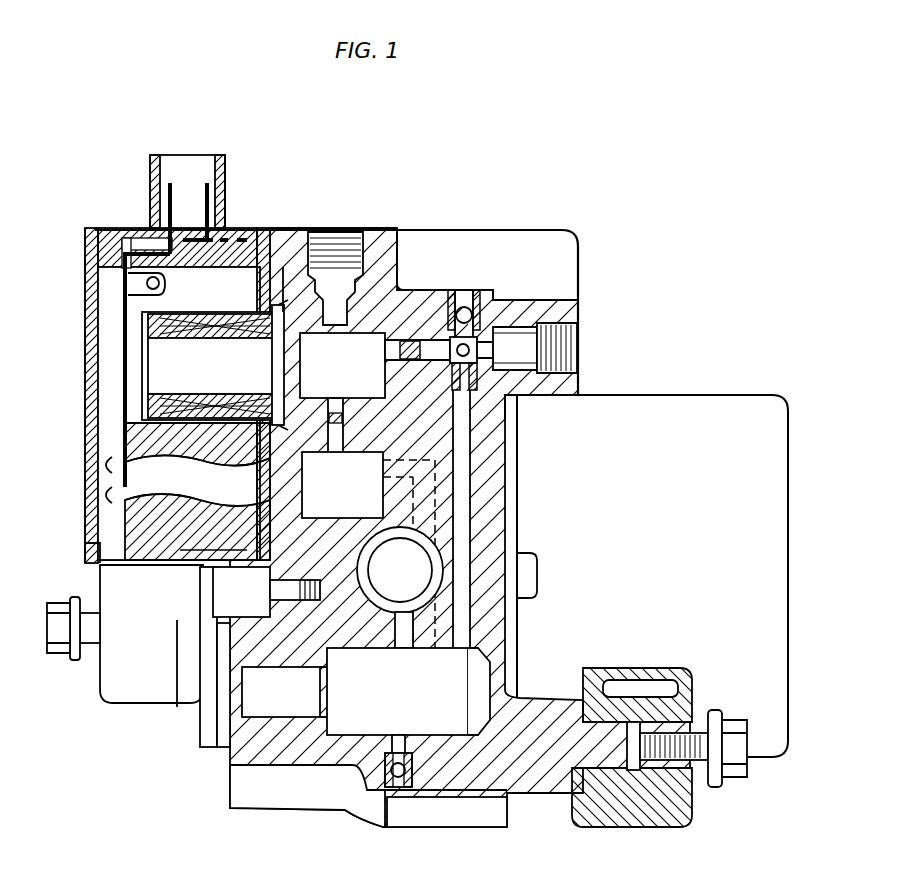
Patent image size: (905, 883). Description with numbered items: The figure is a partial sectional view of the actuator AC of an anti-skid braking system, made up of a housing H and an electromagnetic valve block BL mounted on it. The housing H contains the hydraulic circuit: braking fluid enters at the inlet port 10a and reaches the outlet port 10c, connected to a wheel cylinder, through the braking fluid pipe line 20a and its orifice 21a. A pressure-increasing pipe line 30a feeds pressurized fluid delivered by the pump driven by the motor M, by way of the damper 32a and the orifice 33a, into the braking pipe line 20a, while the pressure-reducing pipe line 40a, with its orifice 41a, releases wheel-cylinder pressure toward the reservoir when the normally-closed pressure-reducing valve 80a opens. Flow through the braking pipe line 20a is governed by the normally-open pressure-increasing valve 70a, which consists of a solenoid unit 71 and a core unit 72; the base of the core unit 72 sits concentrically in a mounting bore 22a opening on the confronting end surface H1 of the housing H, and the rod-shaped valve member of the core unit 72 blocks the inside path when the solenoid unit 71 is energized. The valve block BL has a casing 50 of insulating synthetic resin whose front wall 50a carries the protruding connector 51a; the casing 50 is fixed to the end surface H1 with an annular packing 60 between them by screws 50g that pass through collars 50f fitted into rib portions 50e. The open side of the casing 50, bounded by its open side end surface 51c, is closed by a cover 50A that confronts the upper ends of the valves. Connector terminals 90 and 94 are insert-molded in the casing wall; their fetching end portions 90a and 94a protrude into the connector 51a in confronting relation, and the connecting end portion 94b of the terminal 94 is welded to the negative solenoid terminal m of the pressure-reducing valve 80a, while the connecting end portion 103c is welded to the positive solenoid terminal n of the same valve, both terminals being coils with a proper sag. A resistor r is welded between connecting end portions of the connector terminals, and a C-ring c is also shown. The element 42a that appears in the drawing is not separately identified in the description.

The casing 50 is at (108, 238).
The front wall 50a is at (126, 240).
The cover 50A is at (85, 296).
The connector terminal 90 is at (162, 178).
The fetching end portion 90a is at (170, 186).
The connector terminal 94 is at (222, 180).
The fetching end portion 94a is at (208, 188).
The connecting end portion 94b is at (90, 563).
The connector 51a is at (226, 215).
The open side end surface 51c is at (125, 425).
The packing 60 is at (263, 240).
The confronting end surface H1 is at (283, 300).
The housing H is at (520, 250).
The actuator AC is at (569, 193).
The electromagnetic valve block BL is at (80, 253).
The outlet port 10c is at (340, 262).
The inlet port 10a is at (575, 347).
The braking fluid pipe line 20a is at (380, 297).
The orifice 21a is at (410, 340).
The mounting bore 22a is at (303, 357).
The C-ring c is at (307, 402).
The resistor r is at (163, 284).
The solenoid unit 71 is at (147, 325).
The core unit 72 is at (152, 358).
The pressure-increasing electromagnetic valve 70a is at (157, 380).
The connecting end portion 103c is at (115, 452).
The negative solenoid terminal m is at (113, 473).
The positive solenoid terminal n is at (113, 505).
The passage 42a is at (267, 487).
The orifice 41a is at (333, 415).
The pressure-reducing pipe line 40a is at (447, 477).
The pressure-increasing pipe line 30a is at (470, 478).
The orifice 33a is at (517, 400).
The damper 32a is at (360, 727).
The pressure-reducing electromagnetic valve 80a is at (167, 492).
The rib portions 50e is at (210, 603).
The collar 50f is at (222, 640).
The screw 50g is at (203, 593).
The motor M is at (717, 410).